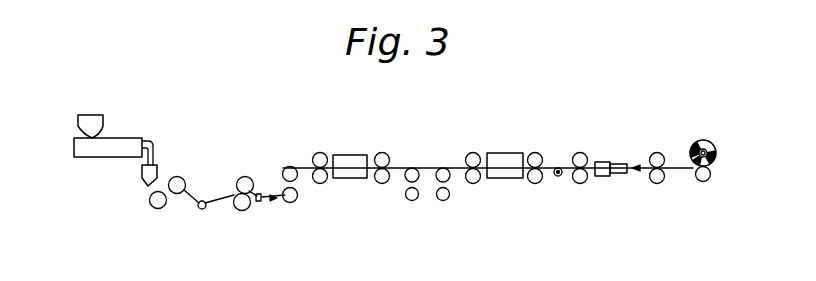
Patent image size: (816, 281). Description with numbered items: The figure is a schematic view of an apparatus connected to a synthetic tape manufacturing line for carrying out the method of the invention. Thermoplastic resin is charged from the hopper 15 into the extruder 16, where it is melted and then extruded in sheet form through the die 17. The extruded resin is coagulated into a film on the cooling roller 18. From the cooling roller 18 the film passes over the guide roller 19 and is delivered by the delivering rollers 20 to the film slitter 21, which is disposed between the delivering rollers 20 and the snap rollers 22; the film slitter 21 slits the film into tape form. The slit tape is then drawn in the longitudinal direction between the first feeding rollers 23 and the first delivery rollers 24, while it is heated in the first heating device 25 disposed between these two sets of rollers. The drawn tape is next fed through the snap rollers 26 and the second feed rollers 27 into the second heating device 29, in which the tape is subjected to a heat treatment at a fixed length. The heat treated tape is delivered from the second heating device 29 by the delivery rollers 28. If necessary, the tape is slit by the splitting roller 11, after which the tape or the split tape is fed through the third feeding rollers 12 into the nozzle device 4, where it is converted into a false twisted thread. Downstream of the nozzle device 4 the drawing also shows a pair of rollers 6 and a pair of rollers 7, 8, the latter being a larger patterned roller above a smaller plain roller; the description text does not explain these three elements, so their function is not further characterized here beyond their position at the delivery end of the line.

The nozzle device 4 is at (604, 177).
The feed rollers 6 is at (660, 158).
The take-up roller 7 is at (703, 182).
The cutter drum 8 is at (706, 142).
The splitting roller 11 is at (559, 177).
The third feeding rollers 12 is at (585, 160).
The hopper 15 is at (93, 126).
The extruder 16 is at (98, 151).
The die 17 is at (151, 170).
The cooling roller 18 is at (165, 207).
The guide roller 19 is at (204, 202).
The delivering rollers 20 is at (237, 207).
The film slitter 21 is at (260, 203).
The snap rollers 22 is at (297, 180).
The first feeding rollers 23 is at (316, 156).
The first delivery rollers 24 is at (388, 159).
The first heating device 25 is at (353, 158).
The snap rollers 26 is at (450, 172).
The second feed rollers 27 is at (475, 152).
The delivery rollers 28 is at (542, 161).
The second heating device 29 is at (505, 174).